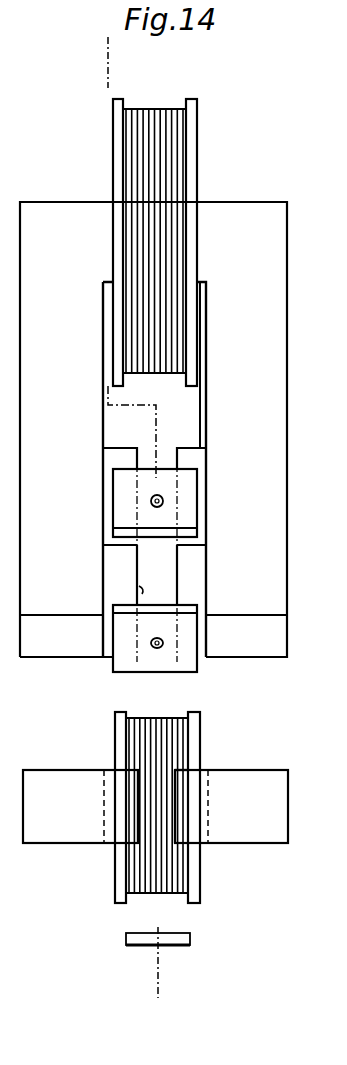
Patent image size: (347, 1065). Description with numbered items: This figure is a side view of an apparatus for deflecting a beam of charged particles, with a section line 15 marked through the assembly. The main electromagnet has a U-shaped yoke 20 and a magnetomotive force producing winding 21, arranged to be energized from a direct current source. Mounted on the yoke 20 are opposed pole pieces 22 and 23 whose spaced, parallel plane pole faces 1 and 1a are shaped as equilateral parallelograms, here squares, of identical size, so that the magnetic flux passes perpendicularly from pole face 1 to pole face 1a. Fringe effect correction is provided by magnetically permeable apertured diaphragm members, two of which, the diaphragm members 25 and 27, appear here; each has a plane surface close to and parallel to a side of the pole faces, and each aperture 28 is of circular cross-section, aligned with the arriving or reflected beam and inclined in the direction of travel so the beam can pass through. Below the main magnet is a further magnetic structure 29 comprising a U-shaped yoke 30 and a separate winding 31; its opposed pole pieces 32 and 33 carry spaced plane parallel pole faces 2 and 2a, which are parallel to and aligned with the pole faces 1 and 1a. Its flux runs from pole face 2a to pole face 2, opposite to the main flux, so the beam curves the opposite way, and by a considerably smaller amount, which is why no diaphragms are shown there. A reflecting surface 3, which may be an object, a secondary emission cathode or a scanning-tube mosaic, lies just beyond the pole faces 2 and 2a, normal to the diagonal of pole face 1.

The pole face 1 is at (172, 572).
The pole face 1a is at (139, 586).
The pole face 2 is at (178, 824).
The pole face 2a is at (135, 818).
The reflecting surface 3 is at (117, 957).
The section line 15- 15 is at (102, 50).
The U-shaped yoke 20 is at (268, 331).
The magnetomotive force producing winding 21 is at (175, 163).
The pole piece 22 is at (194, 555).
The pole piece 23 is at (123, 562).
The apertured diaphragm member 25 is at (160, 663).
The apertured diaphragm member 27 is at (188, 483).
The aperture 28 is at (165, 503).
The further magnetic structure 29 is at (218, 753).
The U-shaped yoke 30 is at (278, 818).
The magnetomotive force producing winding 31 is at (180, 866).
The pole piece 32 is at (213, 782).
The pole piece 33 is at (97, 780).